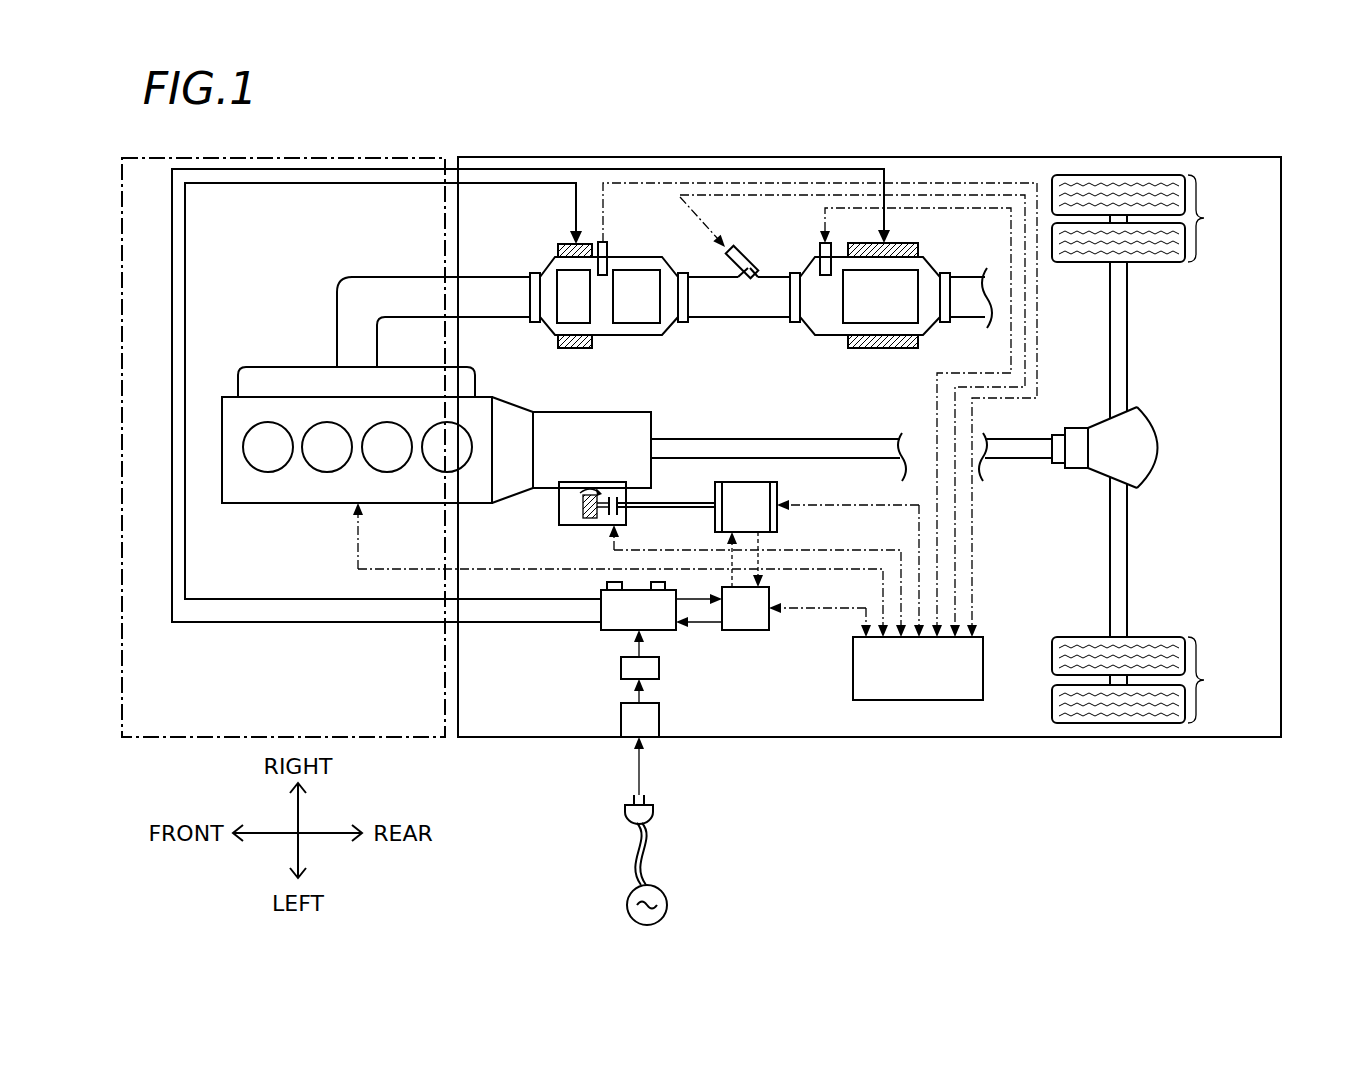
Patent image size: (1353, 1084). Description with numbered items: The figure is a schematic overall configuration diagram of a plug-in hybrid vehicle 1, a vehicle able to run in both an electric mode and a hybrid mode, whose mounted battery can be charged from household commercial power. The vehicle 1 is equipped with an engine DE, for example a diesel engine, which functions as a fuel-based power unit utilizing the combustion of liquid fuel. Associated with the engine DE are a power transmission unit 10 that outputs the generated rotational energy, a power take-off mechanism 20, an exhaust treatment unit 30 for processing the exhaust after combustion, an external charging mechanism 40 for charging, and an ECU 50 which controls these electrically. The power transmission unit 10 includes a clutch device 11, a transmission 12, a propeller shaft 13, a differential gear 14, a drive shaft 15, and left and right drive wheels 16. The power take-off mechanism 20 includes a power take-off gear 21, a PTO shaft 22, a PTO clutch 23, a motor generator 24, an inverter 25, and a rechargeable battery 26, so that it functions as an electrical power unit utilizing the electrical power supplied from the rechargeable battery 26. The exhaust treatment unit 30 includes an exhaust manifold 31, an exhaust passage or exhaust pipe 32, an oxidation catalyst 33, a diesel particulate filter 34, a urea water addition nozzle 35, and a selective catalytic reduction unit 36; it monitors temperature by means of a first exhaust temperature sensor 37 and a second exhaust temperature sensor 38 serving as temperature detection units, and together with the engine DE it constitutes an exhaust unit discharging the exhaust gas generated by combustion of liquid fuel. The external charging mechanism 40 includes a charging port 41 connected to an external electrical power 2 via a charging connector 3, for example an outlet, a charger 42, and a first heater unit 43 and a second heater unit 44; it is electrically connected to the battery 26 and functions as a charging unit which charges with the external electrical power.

The plug-in hybrid vehicle 1 is at (996, 766).
The external electrical power 2 is at (627, 912).
The charging connector 3 is at (656, 820).
The power transmission unit 10 is at (704, 483).
The clutch device 11 is at (506, 398).
The transmission 12 is at (628, 410).
The propeller shaft 13 is at (800, 435).
The differential gear 14 is at (1152, 447).
The drive shaft 15 is at (1123, 572).
The drive wheels 16 is at (1145, 449).
The power take-off mechanism 20 is at (531, 449).
The power take-off gear 21 is at (558, 505).
The PTO shaft 22 is at (693, 503).
The PTO clutch 23 is at (628, 510).
The motor generator 24 is at (753, 482).
The inverter 25 is at (718, 650).
The rechargeable battery 26 is at (660, 632).
The exhaust treatment unit 30 is at (637, 410).
The exhaust manifold 31 is at (262, 365).
The exhaust passage 32 is at (392, 276).
The oxidation catalyst 33 is at (564, 311).
The diesel particulate filter 34 is at (627, 311).
The urea water addition nozzle 35 is at (745, 255).
The selective catalytic reduction unit 36 is at (871, 311).
The first exhaust temperature sensor 37 is at (610, 249).
The second exhaust temperature sensor 38 is at (818, 249).
The external charging mechanism 40 is at (601, 732).
The charging port 41 is at (651, 740).
The charger 42 is at (621, 666).
The first heater unit 43 is at (556, 250).
The second heater unit 44 is at (885, 352).
The ECU 50 is at (907, 687).
The engine DE is at (280, 505).